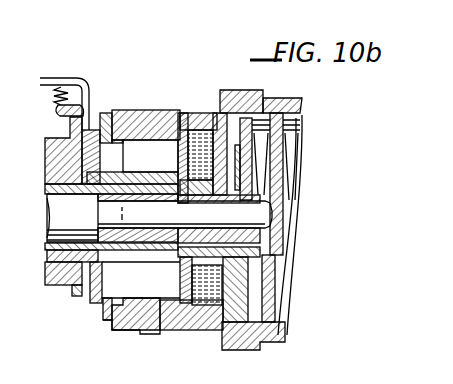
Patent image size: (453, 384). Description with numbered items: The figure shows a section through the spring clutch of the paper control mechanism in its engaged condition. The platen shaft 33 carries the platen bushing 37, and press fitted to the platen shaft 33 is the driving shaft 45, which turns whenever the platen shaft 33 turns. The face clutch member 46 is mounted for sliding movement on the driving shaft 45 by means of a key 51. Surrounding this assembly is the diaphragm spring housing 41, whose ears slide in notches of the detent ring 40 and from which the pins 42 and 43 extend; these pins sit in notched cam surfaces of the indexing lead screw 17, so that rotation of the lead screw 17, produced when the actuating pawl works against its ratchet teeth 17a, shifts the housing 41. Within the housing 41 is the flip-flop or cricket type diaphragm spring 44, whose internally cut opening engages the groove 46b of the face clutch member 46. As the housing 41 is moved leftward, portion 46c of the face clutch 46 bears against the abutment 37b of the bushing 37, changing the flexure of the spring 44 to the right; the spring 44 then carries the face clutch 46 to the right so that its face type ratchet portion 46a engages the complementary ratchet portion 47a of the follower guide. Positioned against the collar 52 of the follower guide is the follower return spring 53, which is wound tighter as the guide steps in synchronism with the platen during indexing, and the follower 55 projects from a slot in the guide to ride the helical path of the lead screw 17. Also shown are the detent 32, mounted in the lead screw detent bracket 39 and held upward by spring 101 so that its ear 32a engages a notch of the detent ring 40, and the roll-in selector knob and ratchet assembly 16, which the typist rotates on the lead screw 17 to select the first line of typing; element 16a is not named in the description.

The roll-in selector knob and ratchet assembly 16 is at (300, 108).
The housing end wall 16a is at (240, 350).
The indexing lead screw 17 is at (103, 318).
The ratchet teeth 17a is at (160, 333).
The detent 32 is at (60, 78).
The ear (extension) of detent 32a is at (102, 118).
The platen shaft 33 is at (48, 207).
The platen bushing 37 is at (45, 143).
The abutment of bushing 37b is at (46, 268).
The lead screw detent bracket 39 is at (57, 111).
The detent ring 40 is at (91, 128).
The diaphragm spring housing 41 is at (159, 110).
The pin 42 is at (126, 114).
The pin 43 is at (113, 330).
The diaphragm spring 44 is at (106, 146).
The driving shaft 45 is at (50, 191).
The face clutch member 46 is at (183, 302).
The face type ratchet portion 46a is at (167, 174).
The groove in face clutch member 46b is at (118, 260).
The portion of face clutch 46c is at (73, 291).
The ratchet portion of follower guide 47a is at (190, 114).
The key 51 is at (47, 250).
The collar 52 is at (183, 332).
The follower return spring 53 is at (212, 137).
The follower 55 is at (248, 160).
The spring 101 is at (53, 95).